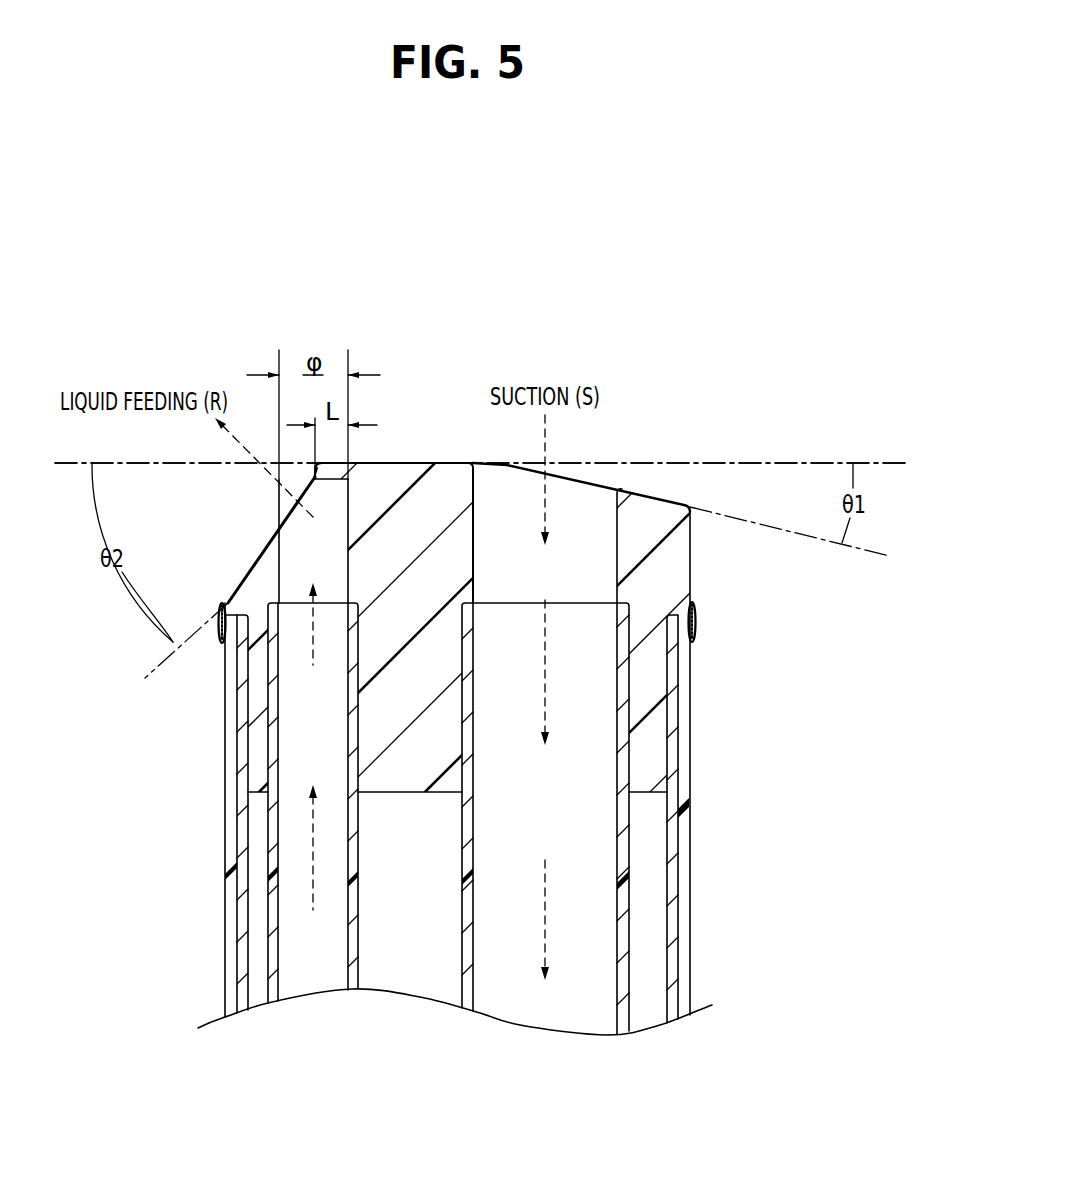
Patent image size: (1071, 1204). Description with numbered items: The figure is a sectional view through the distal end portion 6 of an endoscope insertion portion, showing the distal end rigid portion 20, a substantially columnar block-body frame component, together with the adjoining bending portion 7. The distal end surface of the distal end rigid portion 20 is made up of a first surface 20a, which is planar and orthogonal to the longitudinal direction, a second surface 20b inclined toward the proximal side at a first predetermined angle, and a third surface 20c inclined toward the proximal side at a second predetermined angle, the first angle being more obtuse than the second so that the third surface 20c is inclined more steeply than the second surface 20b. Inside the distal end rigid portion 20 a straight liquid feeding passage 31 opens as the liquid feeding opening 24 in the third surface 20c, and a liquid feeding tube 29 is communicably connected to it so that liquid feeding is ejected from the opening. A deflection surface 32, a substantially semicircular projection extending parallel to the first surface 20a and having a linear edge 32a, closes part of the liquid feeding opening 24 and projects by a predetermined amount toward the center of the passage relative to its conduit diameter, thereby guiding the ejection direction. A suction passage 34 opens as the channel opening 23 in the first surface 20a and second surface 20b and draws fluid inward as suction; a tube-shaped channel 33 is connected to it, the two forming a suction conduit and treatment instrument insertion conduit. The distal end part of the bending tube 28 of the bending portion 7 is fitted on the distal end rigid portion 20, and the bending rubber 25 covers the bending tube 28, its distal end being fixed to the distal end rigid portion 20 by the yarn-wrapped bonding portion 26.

The distal end portion 6 is at (668, 430).
The bending portion 7 is at (738, 886).
The distal end rigid portion 20 is at (690, 588).
The first surface 20a is at (452, 463).
The second surface 20b is at (668, 497).
The third surface 20c is at (260, 540).
The channel opening 23 is at (587, 482).
The liquid feeding opening 24 is at (303, 495).
The bending rubber 25 is at (225, 728).
The yarn-wrapped bonding portion 26 is at (695, 624).
The bending tube 28 is at (240, 818).
The liquid feeding tube 29 is at (270, 903).
The liquid feeding passage 31 is at (297, 557).
The deflection surface 32 is at (332, 500).
The linear edge 32a is at (313, 478).
The channel 33 is at (630, 818).
The suction passage 34 is at (593, 555).